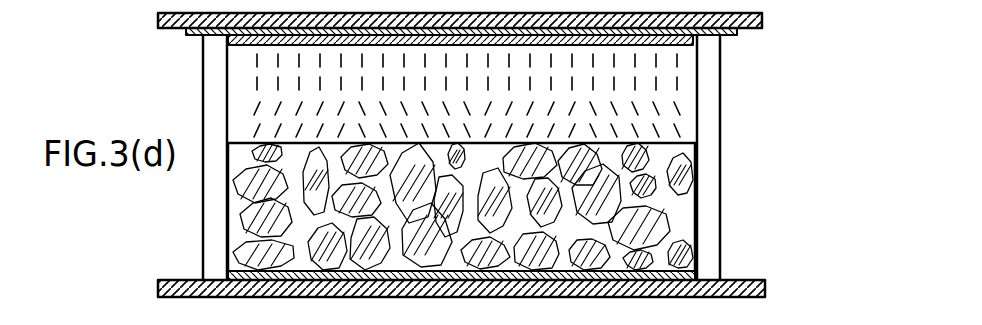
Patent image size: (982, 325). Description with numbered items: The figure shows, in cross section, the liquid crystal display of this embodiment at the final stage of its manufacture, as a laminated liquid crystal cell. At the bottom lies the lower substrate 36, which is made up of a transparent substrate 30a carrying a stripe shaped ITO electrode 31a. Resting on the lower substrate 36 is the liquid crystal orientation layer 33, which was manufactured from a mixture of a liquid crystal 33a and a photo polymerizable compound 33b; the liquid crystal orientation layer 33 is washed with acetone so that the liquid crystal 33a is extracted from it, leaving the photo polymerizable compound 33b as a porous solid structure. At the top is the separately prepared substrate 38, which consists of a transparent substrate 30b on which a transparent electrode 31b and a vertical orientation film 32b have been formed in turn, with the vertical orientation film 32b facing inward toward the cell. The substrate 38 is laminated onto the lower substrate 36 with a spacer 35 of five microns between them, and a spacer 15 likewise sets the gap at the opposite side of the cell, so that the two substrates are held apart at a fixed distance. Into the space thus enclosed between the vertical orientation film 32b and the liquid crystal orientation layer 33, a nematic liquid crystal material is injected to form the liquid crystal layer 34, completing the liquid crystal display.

The spacer 15 is at (218, 233).
The transparent substrate 30a is at (765, 290).
The transparent substrate 30b is at (764, 22).
The stripe shaped ITO electrode 31a is at (697, 262).
The transparent electrode 31b is at (737, 33).
The vertical orientation film 32b is at (693, 45).
The liquid crystal orientation layer 33 is at (543, 207).
The liquid crystal 33a is at (655, 190).
The photo polymerizable compound 33b is at (682, 222).
The liquid crystal layer 34 is at (682, 105).
The spacer 35 is at (708, 138).
The lower substrate 36 is at (520, 265).
The substrate 38 is at (525, 43).